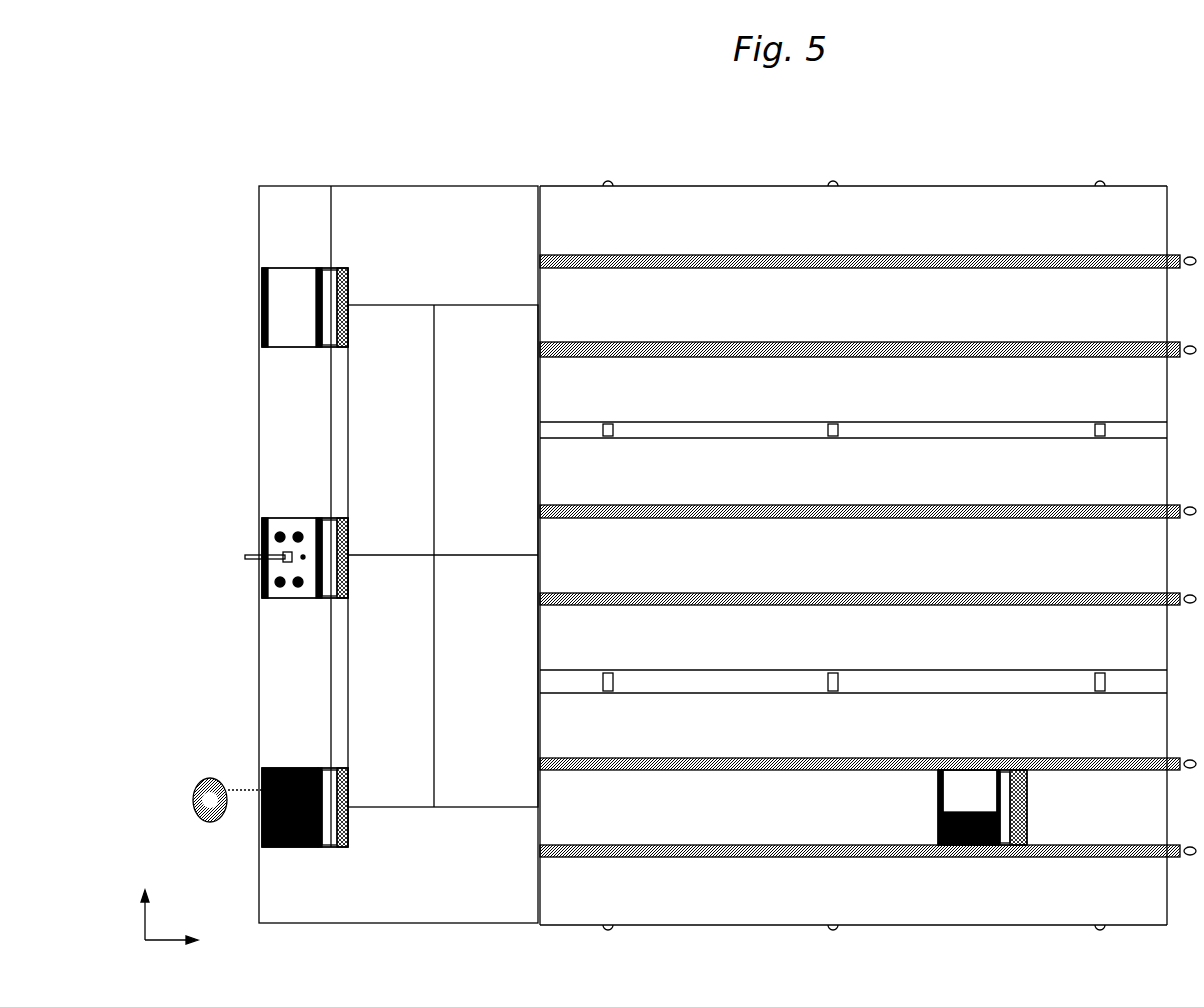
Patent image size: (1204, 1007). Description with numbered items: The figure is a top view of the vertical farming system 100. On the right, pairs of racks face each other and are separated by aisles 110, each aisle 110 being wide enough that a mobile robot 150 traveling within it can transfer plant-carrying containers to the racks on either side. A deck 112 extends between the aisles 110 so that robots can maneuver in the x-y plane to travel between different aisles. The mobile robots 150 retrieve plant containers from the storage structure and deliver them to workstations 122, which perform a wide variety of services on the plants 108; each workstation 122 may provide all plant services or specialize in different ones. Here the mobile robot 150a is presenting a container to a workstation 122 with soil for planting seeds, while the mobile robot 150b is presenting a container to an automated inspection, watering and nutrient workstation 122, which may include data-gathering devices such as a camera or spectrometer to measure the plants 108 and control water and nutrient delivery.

The vertical farming system 100 is at (328, 92).
The plants 108 is at (308, 587).
The aisles 110 is at (783, 312).
The decks 112 is at (506, 414).
The workstations 122 is at (297, 268).
The mobile robots 150 is at (345, 270).
The mobile robot 150a is at (345, 770).
The mobile robot 150b is at (340, 520).